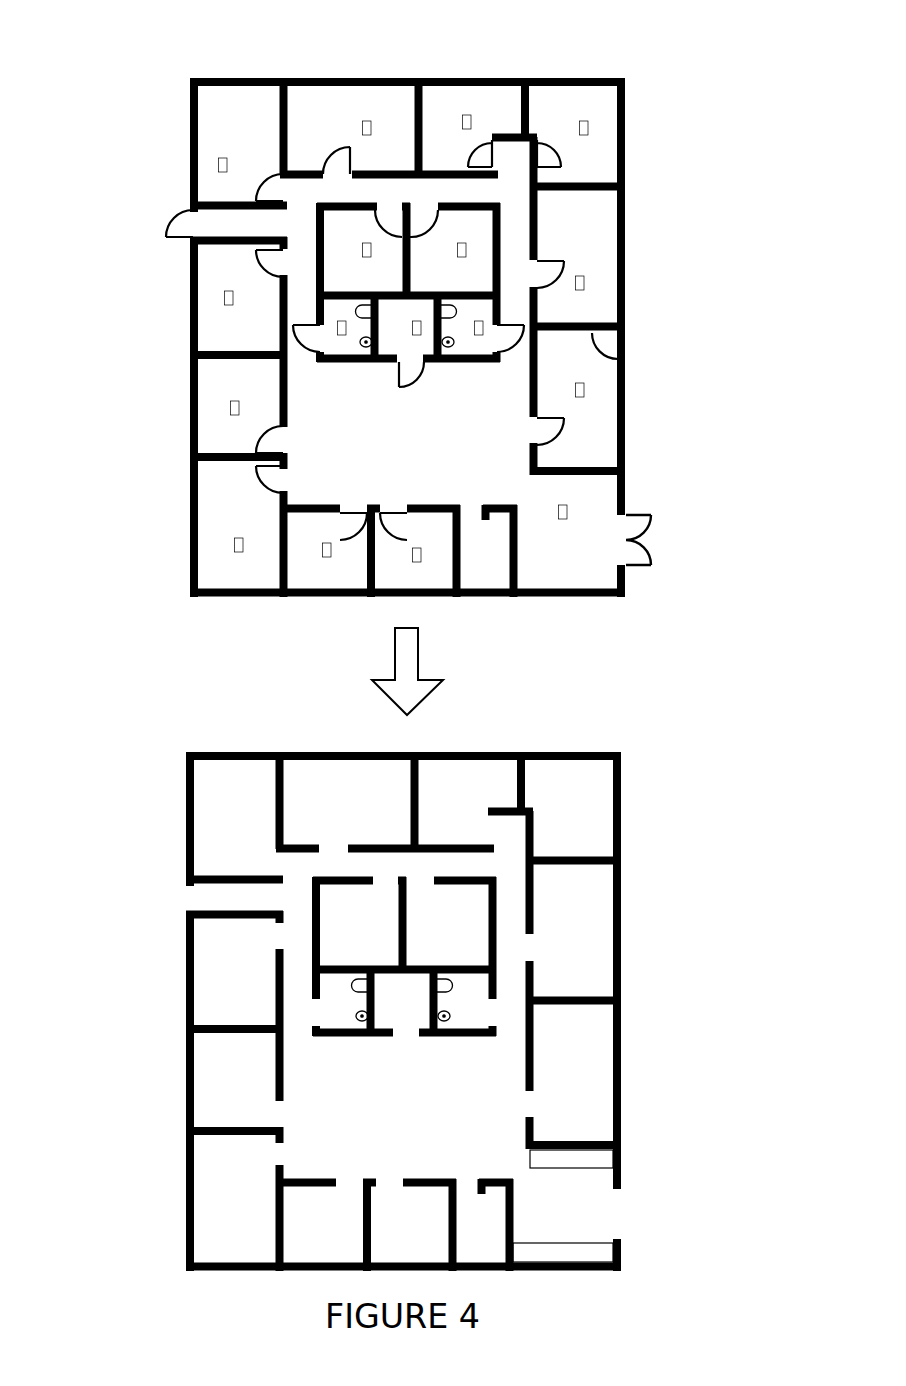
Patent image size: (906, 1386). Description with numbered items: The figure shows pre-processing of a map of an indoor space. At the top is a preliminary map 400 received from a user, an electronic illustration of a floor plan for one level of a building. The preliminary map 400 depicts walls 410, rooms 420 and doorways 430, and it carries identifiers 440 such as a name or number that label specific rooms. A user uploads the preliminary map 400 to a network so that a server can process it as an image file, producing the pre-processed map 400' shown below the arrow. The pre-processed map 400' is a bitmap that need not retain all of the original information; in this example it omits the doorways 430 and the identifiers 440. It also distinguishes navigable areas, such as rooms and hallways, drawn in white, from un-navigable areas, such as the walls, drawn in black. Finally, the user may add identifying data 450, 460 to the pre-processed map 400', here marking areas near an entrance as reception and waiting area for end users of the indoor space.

The preliminary map 400 is at (389, 303).
The pre-processed map 400' is at (400, 1004).
The walls 410 is at (622, 368).
The rooms 420 is at (595, 158).
The doorways 430 is at (645, 533).
The identifiers 440 is at (587, 284).
The identifying data 450 is at (611, 1160).
The identifying data 460 is at (611, 1255).